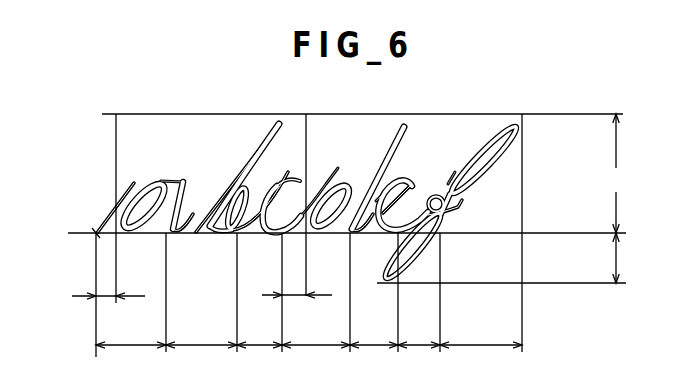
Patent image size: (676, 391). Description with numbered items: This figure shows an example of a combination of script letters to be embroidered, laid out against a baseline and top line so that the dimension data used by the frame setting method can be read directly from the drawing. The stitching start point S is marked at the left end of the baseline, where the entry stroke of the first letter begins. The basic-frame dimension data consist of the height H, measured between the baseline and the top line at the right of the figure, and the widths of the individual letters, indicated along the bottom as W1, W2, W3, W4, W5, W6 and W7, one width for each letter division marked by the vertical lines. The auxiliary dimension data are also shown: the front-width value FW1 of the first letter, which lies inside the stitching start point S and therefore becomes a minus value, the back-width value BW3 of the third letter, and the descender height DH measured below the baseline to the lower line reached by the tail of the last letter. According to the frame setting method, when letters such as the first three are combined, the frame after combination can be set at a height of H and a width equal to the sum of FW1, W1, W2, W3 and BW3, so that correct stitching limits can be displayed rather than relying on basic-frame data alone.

The stitching start point S is at (96, 233).
The H dimension data H is at (614, 173).
The DH dimension data DH is at (505, 258).
The FW dimension data of the first letter FW1 is at (105, 293).
The BW dimension data of the third letter BW3 is at (292, 292).
The W dimension data of the first letter W1 is at (131, 292).
The W dimension data of the second letter W2 is at (201, 292).
The W dimension data of the third letter W3 is at (259, 332).
The W dimension data of the fourth letter W4 is at (316, 292).
The W dimension data of the fifth letter W5 is at (374, 292).
The W dimension data of the sixth letter W6 is at (419, 292).
The W dimension data of the seventh letter W7 is at (481, 332).